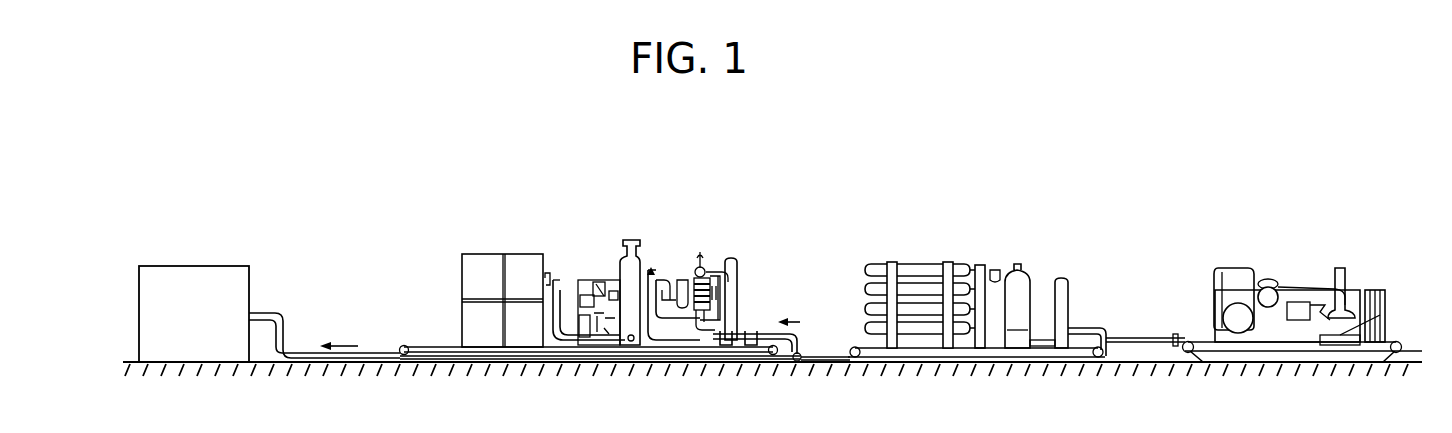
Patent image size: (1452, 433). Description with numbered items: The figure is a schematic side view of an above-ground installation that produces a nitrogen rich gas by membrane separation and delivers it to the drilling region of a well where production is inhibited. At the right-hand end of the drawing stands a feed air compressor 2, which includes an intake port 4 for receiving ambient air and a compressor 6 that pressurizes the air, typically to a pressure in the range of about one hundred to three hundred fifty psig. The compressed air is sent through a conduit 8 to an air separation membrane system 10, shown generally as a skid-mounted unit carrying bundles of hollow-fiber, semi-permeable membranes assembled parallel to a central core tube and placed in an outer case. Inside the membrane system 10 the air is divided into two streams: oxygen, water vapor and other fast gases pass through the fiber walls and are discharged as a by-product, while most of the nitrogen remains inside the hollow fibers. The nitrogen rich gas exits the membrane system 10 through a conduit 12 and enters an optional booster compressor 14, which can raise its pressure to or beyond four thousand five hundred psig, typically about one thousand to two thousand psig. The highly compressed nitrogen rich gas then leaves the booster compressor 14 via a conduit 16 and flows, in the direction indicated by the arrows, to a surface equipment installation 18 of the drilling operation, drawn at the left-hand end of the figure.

The feed air compressor 2 is at (1352, 257).
The intake port 4 is at (1283, 270).
The compressor 6 is at (1228, 270).
The conduit 8 is at (1148, 343).
The air separation membrane system 10 is at (1000, 249).
The conduit 12 is at (805, 362).
The booster compressor 14 is at (675, 262).
The conduit 16 is at (377, 357).
The surface equipment installation 18 is at (201, 317).